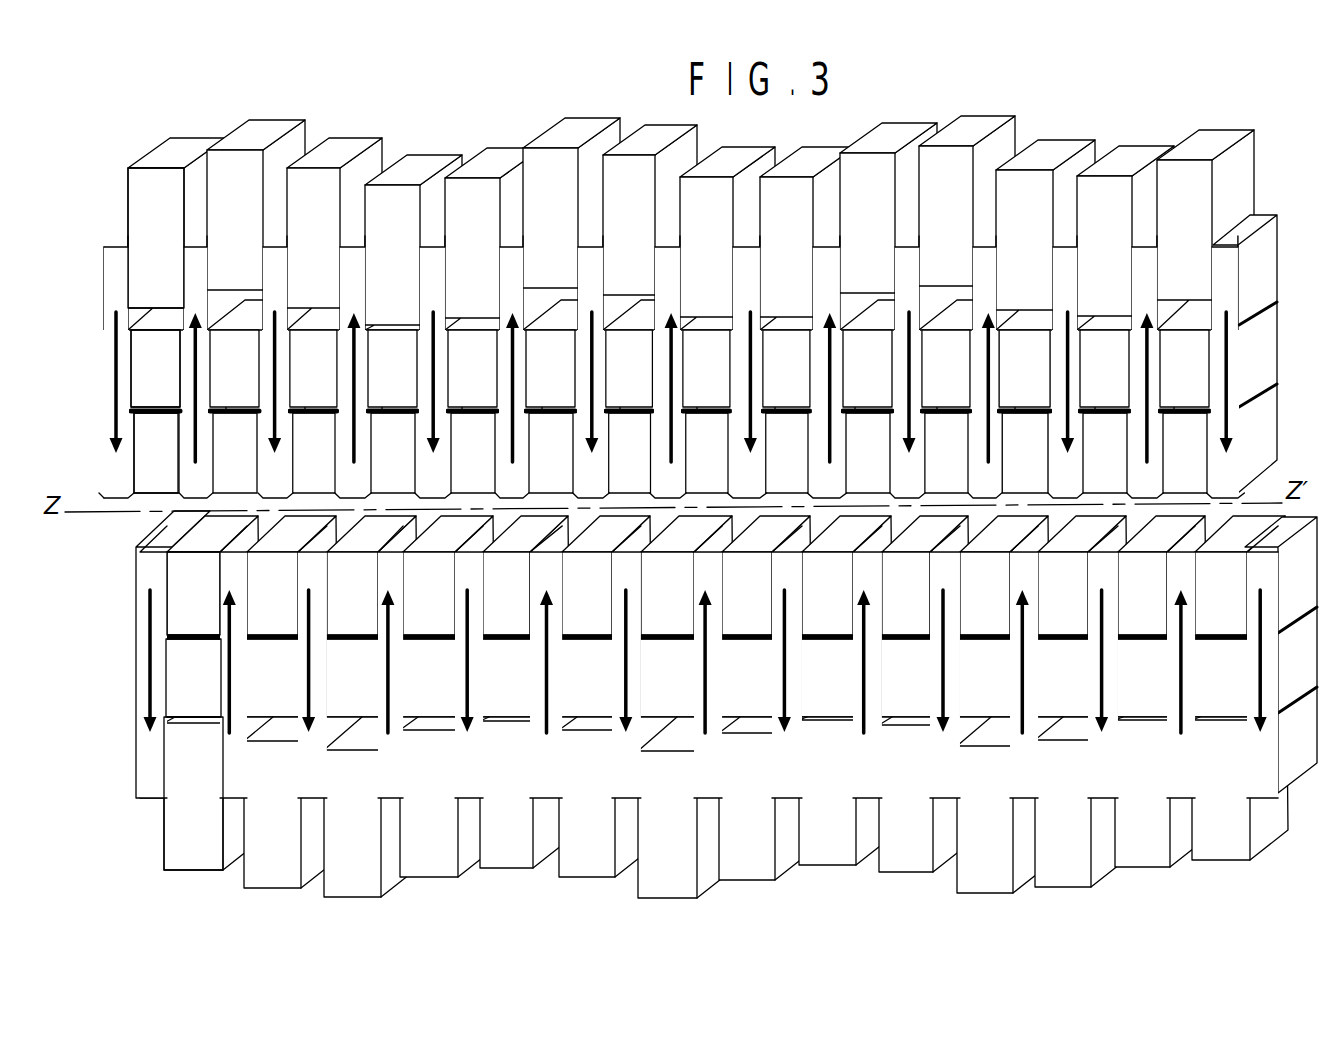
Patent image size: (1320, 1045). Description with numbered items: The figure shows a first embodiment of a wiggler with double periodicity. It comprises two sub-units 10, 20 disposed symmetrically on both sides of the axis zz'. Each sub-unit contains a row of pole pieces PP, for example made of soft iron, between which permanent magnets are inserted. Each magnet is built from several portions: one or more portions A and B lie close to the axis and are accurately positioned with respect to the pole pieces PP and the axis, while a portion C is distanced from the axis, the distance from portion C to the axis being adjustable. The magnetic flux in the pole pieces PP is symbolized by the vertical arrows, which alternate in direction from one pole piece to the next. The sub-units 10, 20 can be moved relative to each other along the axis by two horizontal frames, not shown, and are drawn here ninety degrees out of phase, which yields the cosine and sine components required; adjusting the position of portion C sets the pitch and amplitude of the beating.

The sub-unit 10 is at (88, 133).
The sub-unit 20 is at (88, 526).
The pole pieces PP is at (545, 788).
The magnet portion A is at (177, 524).
The magnet portion B is at (176, 523).
The magnet portion C is at (175, 519).